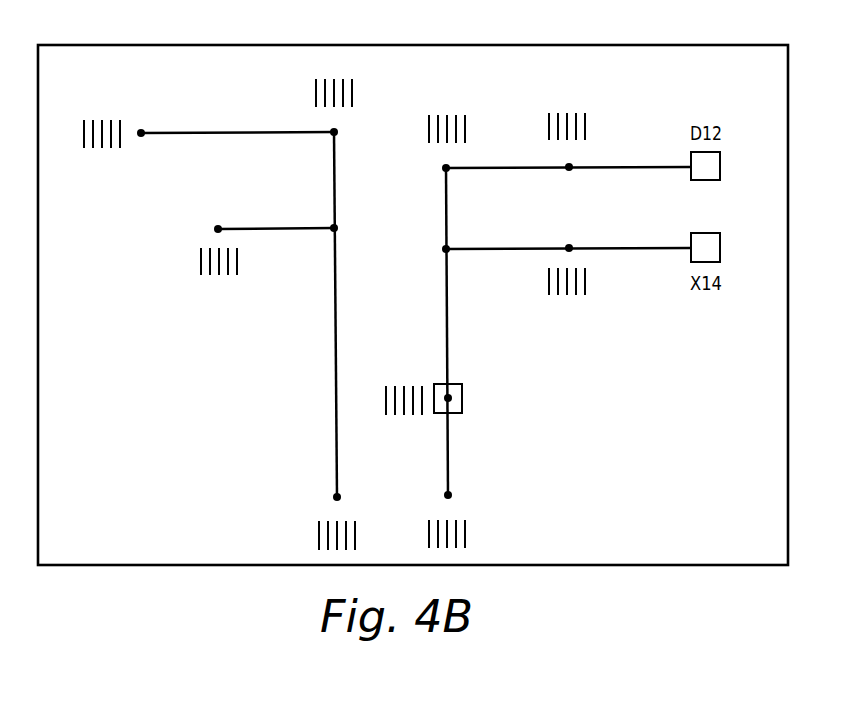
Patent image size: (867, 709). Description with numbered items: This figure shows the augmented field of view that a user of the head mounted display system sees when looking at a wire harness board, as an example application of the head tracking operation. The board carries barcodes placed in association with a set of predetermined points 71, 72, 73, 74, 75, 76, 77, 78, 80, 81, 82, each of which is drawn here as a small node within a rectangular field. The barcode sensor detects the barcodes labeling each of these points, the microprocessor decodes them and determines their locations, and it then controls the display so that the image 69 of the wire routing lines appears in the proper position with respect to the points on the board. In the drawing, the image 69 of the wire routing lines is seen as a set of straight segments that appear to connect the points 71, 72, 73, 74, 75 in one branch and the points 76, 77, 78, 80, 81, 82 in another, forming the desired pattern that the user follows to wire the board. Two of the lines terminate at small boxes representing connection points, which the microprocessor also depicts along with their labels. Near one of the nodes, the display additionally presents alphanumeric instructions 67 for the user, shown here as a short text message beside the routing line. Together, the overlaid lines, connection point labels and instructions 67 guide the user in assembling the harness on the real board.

The alphanumeric instructions 67 is at (537, 360).
The image of the wire routing lines 69 is at (243, 131).
The predetermined point 71 is at (141, 130).
The predetermined point 72 is at (338, 131).
The predetermined point 73 is at (218, 226).
The predetermined point 74 is at (338, 227).
The predetermined point 75 is at (334, 495).
The predetermined point 76 is at (442, 168).
The predetermined point 77 is at (449, 246).
The predetermined point 78 is at (451, 399).
The predetermined point 80 is at (445, 494).
The predetermined point 81 is at (569, 170).
The predetermined point 82 is at (569, 245).